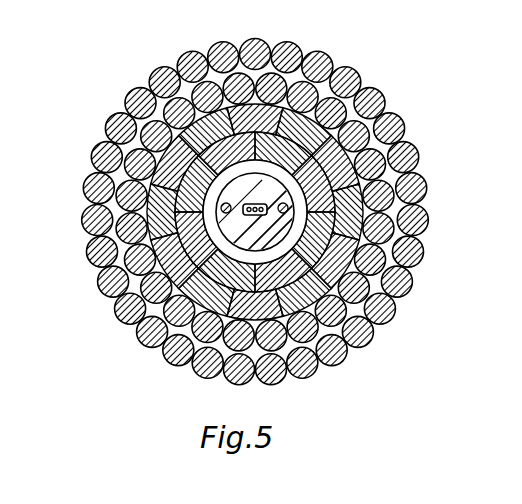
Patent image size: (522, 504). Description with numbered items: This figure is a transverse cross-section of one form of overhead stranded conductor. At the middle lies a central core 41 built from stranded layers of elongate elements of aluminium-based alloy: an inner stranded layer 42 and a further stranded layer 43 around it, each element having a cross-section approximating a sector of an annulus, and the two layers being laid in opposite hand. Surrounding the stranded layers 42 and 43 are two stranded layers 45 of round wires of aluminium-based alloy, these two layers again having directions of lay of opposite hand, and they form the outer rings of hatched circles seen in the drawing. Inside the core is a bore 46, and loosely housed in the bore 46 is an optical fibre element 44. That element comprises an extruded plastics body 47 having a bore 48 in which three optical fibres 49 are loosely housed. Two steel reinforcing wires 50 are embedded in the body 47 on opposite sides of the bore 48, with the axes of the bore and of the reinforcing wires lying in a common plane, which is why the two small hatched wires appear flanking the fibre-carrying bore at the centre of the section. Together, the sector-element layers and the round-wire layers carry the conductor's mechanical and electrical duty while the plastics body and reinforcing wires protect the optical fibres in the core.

The central core 41 is at (410, 158).
The inner stranded layer 42 is at (398, 272).
The stranded layer 43 is at (417, 222).
The optical fibre element 44 is at (177, 193).
The stranded layers of round wires 45 is at (365, 320).
The bore 46 is at (128, 97).
The extruded plastics body 47 is at (110, 288).
The bore 48 is at (340, 78).
The optical fibres 49 is at (258, 204).
The steel reinforcing wires 50 is at (348, 355).